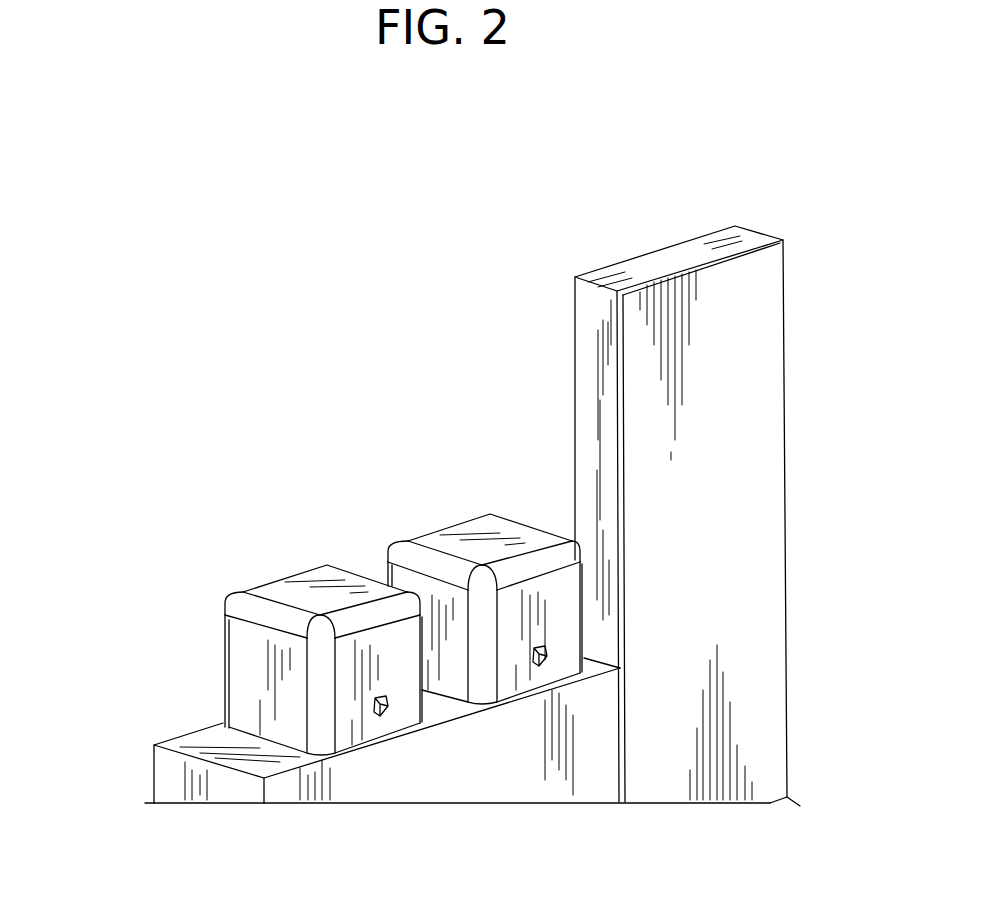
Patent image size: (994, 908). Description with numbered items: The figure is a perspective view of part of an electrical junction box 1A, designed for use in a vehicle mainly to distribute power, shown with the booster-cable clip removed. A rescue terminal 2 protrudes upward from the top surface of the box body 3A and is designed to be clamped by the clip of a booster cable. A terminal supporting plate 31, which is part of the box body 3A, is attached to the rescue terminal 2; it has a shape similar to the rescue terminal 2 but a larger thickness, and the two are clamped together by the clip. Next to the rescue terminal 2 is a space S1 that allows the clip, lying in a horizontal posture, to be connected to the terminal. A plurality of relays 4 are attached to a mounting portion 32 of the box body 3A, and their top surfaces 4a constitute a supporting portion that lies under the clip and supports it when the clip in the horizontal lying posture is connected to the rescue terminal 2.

The electrical junction box 1A is at (775, 172).
The rescue terminal 2 is at (748, 310).
The terminal supporting plate 31 is at (574, 323).
The box body 3A is at (153, 768).
The mounting portion 32 is at (195, 745).
The relays 4 is at (394, 546).
The top surfaces 4a is at (277, 590).
The space S1 is at (412, 436).